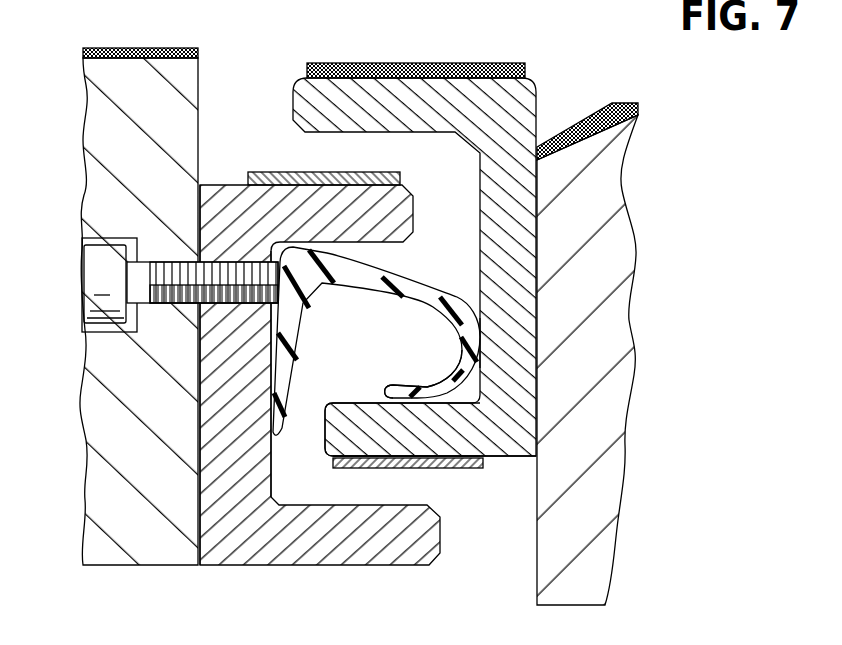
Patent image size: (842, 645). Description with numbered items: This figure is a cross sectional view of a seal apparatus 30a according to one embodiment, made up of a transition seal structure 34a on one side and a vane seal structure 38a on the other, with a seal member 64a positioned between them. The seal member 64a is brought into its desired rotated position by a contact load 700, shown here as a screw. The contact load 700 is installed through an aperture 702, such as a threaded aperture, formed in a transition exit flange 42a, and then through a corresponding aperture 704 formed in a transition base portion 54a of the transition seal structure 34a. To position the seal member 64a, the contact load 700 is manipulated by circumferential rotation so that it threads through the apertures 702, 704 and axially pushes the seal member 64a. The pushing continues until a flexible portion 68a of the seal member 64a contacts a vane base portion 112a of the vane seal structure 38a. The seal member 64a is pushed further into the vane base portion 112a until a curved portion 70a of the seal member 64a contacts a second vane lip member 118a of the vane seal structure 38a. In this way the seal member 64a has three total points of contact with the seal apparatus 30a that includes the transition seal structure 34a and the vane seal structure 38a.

The transition exit flange 42a is at (108, 75).
The contact load 700 is at (145, 288).
The aperture 702 is at (160, 290).
The aperture 704 is at (233, 265).
The seal apparatus 30a is at (315, 398).
The transition seal structure 34a is at (259, 578).
The transition base portion 54a is at (210, 520).
The vane base portion 112a is at (490, 334).
The vane seal structure 38a is at (517, 469).
The second vane lip member 118a is at (355, 418).
The seal member 64a is at (486, 323).
The curved portion 70a is at (447, 380).
The flexible portion 68a is at (488, 337).